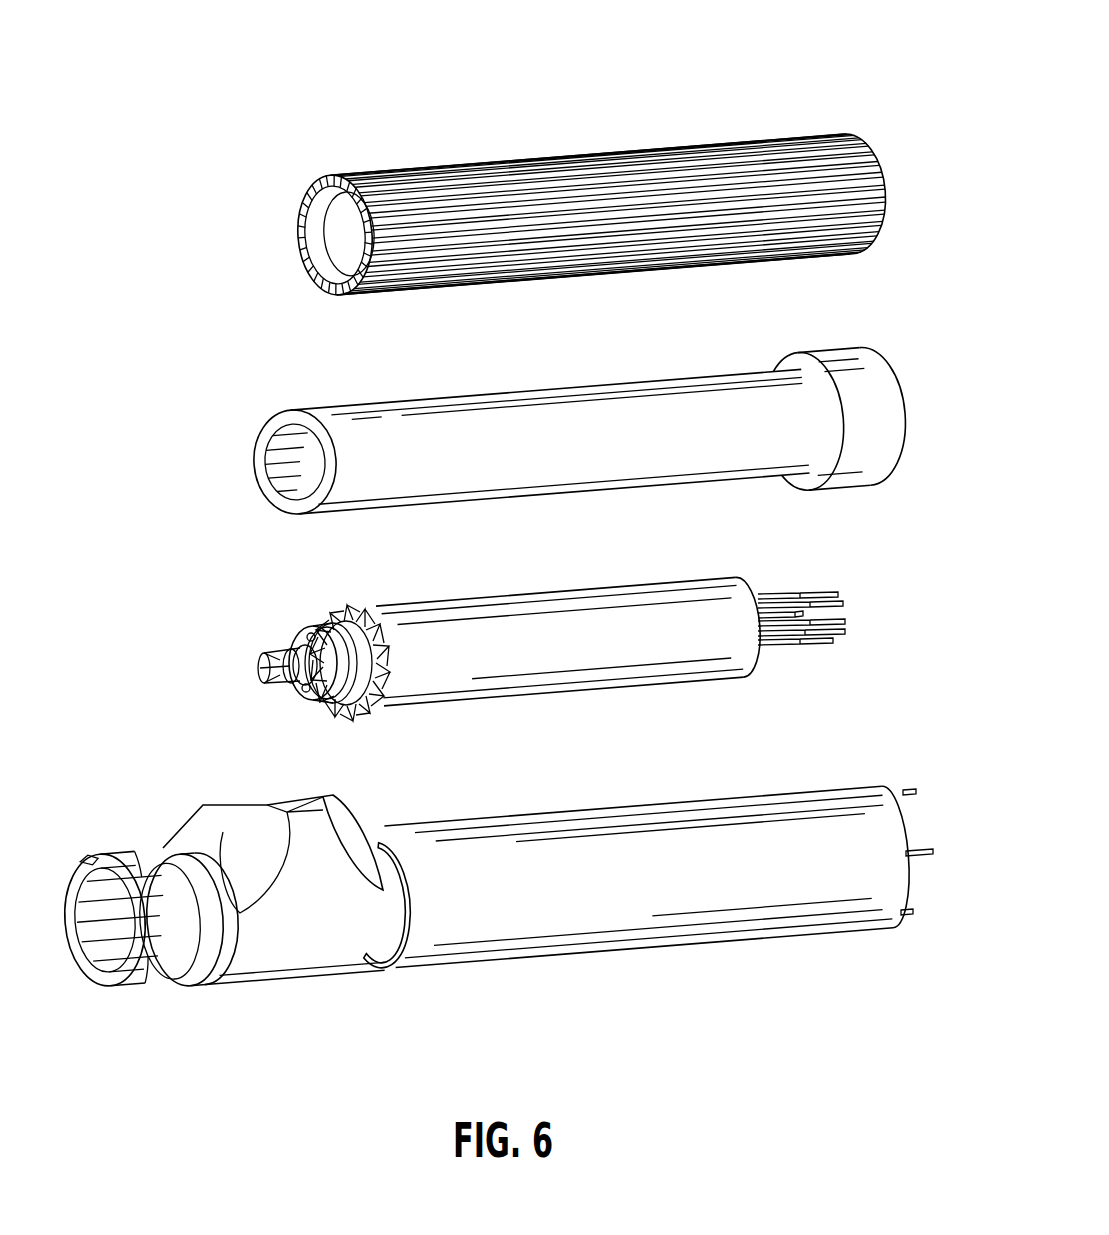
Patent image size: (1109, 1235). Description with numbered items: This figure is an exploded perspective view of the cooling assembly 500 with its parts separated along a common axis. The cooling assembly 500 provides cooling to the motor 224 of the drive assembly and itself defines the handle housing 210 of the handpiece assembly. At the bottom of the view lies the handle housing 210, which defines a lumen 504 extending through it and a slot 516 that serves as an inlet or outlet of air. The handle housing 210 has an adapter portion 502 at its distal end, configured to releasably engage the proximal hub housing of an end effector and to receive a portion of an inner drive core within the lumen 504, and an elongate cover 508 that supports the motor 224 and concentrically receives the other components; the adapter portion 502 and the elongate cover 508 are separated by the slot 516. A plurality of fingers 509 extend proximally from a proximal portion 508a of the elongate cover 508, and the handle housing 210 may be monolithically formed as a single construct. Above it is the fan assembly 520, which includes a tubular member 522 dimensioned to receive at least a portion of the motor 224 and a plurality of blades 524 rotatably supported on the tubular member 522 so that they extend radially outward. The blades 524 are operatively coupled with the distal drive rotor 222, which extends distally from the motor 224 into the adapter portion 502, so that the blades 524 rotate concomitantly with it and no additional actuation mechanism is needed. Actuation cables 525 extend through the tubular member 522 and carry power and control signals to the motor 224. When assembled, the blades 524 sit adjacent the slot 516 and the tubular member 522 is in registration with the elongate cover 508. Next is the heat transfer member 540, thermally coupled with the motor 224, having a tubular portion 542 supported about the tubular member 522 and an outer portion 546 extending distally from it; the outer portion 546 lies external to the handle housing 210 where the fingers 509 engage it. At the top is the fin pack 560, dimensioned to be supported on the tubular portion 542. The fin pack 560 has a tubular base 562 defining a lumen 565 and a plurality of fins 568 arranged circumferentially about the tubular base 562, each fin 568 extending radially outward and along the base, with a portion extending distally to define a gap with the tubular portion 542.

The cooling assembly 500 is at (697, 93).
The fin pack 560 is at (286, 228).
The tubular base 562 is at (717, 226).
The fins 568 is at (432, 176).
The lumen 565 is at (306, 266).
The heat transfer member 540 is at (250, 495).
The tubular portion 542 is at (578, 456).
The outer portion 546 is at (878, 441).
The fan assembly 520 is at (226, 700).
The tubular member 522 is at (641, 656).
The actuation cables 525 is at (836, 606).
The motor 224 is at (295, 622).
The distal drive rotor 222 is at (283, 655).
The blades 524 is at (372, 718).
The adapter portion 502 is at (295, 938).
The handle housing 210 is at (90, 890).
The lumen 504 is at (148, 945).
The slot 516 is at (407, 955).
The elongate cover 508 is at (600, 918).
The proximal portion 508a is at (882, 895).
The fingers 509 is at (917, 840).